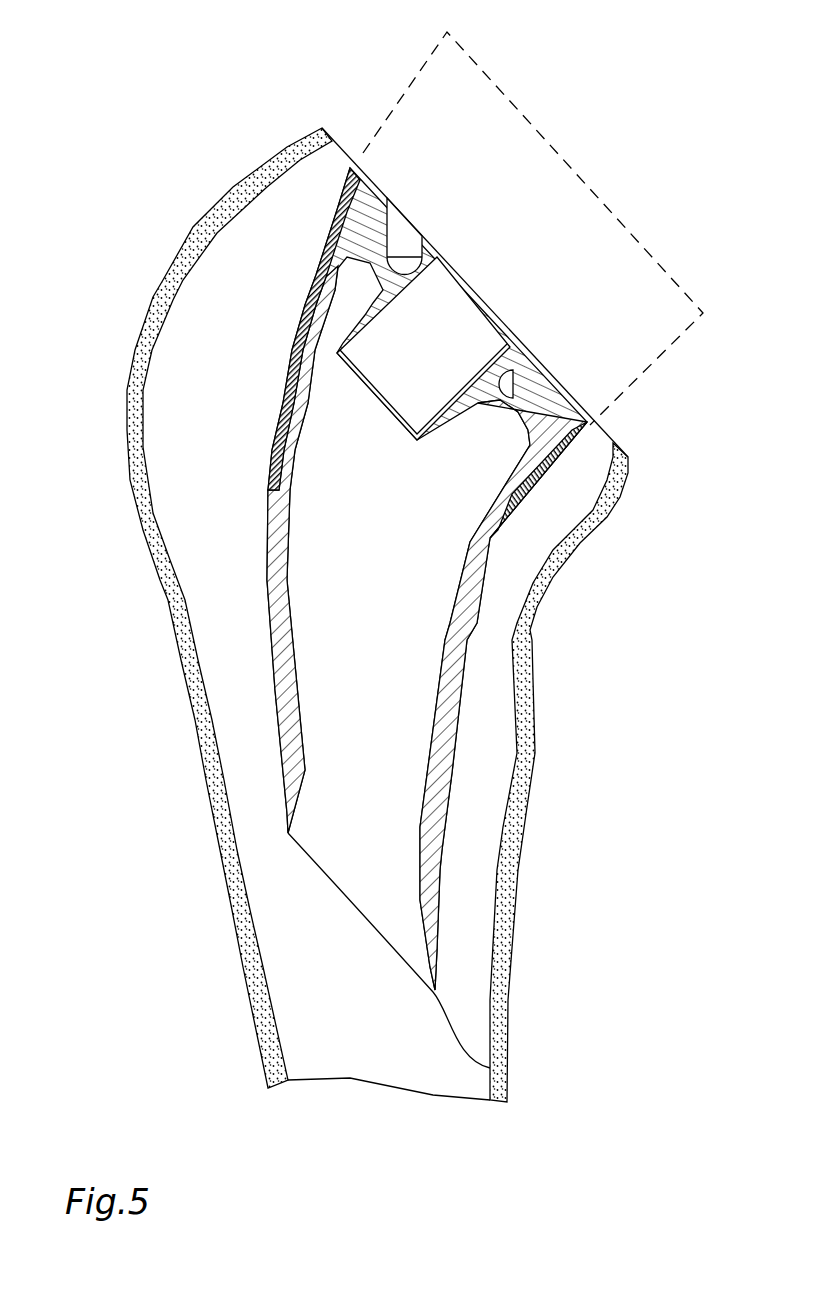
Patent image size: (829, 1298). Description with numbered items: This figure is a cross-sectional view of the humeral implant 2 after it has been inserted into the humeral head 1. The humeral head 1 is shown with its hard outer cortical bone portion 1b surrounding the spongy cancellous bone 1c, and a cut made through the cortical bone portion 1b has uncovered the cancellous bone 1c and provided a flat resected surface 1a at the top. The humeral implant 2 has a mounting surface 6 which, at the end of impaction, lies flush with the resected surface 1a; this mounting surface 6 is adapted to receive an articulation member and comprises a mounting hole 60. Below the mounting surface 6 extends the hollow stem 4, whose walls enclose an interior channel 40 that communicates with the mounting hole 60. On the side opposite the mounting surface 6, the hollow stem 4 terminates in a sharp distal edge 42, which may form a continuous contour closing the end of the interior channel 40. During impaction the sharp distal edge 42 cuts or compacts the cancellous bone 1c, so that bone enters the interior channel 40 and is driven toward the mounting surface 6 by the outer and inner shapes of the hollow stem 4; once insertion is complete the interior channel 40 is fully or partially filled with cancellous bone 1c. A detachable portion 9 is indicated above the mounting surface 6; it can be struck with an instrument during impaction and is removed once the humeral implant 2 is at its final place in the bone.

The humeral head 1 is at (386, 557).
The resected surface 1a is at (337, 135).
The cortical bone portion 1b is at (533, 757).
The cancellous bone 1c is at (420, 848).
The humeral implant 2 is at (470, 560).
The hollow stem 4 is at (430, 807).
The mounting surface 6 is at (388, 188).
The detachable portion 9 is at (582, 165).
The interior channel 40 is at (368, 622).
The sharp distal edge 42 is at (490, 1068).
The mounting hole 60 is at (443, 337).